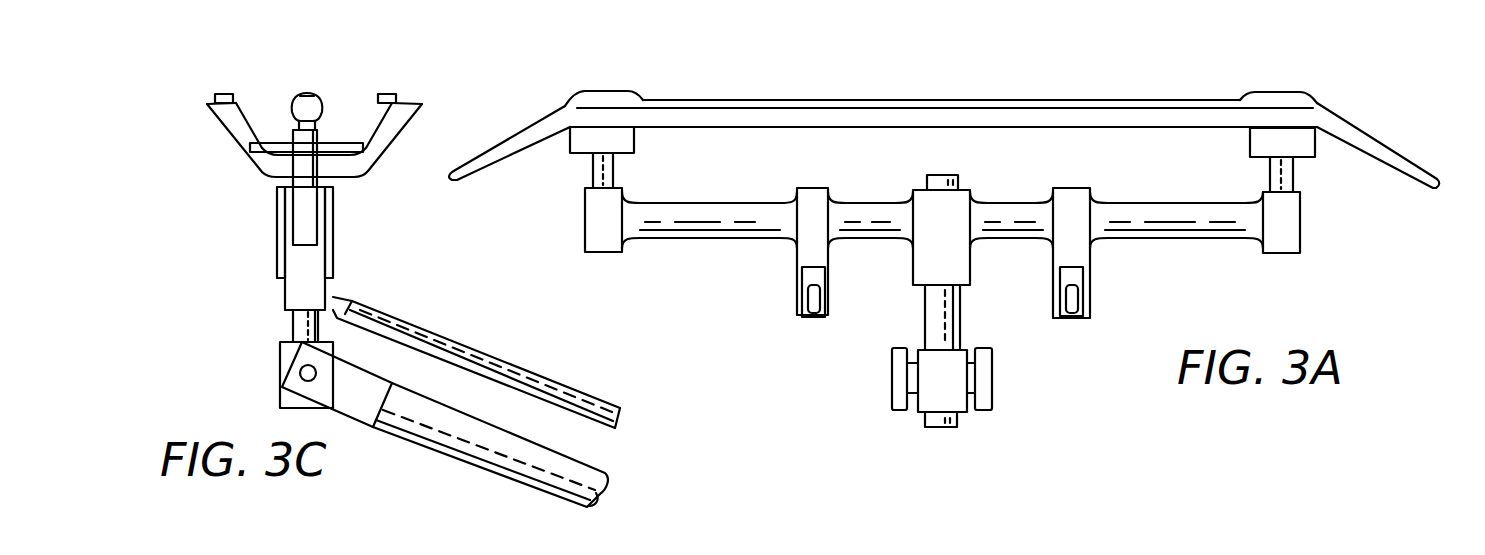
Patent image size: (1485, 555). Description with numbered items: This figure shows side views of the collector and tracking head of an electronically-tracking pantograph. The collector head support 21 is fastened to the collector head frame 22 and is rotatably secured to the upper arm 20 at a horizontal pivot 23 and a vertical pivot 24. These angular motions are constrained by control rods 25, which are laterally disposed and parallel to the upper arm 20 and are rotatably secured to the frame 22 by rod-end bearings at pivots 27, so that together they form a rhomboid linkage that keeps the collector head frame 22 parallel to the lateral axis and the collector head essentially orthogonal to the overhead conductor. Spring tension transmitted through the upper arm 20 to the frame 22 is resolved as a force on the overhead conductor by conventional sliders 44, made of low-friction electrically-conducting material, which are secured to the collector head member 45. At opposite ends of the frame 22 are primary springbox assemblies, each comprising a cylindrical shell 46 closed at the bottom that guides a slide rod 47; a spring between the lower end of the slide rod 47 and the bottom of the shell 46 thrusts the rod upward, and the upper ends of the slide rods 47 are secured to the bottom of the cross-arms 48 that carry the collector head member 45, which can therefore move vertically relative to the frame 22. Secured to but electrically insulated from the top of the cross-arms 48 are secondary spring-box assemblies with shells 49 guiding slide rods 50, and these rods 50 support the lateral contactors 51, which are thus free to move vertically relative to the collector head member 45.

In FIG. 3C, the upper arm 20 is at (497, 457).
In FIG. 3C, the collector head support 21 is at (293, 327).
In FIG. 3A, the collector head support 21 is at (940, 310).
In FIG. 3A, the collector head frame 22 is at (753, 227).
In FIG. 3C, the horizontal pivot 23 is at (300, 375).
In FIG. 3A, the horizontal pivot 23 is at (913, 393).
In FIG. 3A, the vertical pivot 24 is at (953, 393).
In FIG. 3C, the control rods 25 is at (427, 342).
In FIG. 3A, the pivots 27 is at (812, 315).
In FIG. 3A, the sliders 44 is at (980, 107).
In FIG. 3C, the collector head member 45 is at (247, 153).
In FIG. 3A, the collector head member 45 is at (518, 140).
In FIG. 3C, the cylindrical shell 46 is at (310, 220).
In FIG. 3A, the cylindrical shell 46 is at (593, 223).
In FIG. 3A, the slide rods 47 is at (595, 172).
In FIG. 3C, the cross-arms 48 is at (272, 145).
In FIG. 3C, the shells 49 is at (318, 136).
In FIG. 3C, the slide rods 50 is at (316, 102).
In FIG. 3C, the lateral contactors 51 is at (305, 95).
In FIG. 3A, the lateral contactors 51 is at (600, 92).